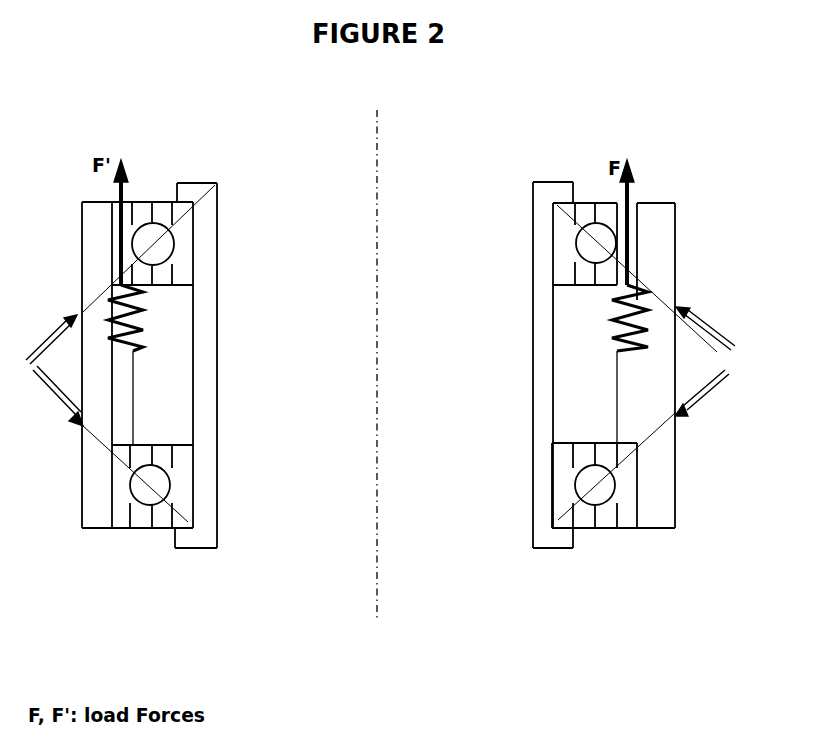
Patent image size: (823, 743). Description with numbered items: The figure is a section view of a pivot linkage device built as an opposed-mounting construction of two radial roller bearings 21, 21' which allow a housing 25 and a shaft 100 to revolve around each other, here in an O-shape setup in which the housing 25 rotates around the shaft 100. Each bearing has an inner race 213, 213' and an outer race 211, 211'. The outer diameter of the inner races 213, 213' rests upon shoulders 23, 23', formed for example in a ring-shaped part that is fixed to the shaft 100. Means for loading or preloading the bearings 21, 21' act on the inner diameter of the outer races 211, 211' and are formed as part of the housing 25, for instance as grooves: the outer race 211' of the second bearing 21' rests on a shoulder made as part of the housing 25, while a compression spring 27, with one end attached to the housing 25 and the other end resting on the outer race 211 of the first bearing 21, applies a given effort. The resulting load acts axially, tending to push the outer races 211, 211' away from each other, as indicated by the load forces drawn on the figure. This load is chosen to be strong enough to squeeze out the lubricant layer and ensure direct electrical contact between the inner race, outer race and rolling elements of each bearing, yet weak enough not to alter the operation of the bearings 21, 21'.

The shaft 100 is at (403, 500).
The first radial roller bearing 21 is at (218, 230).
The second radial roller bearing 21' is at (220, 467).
The outer race of the first bearing 211 is at (651, 204).
The outer race of the second bearing 211' is at (130, 530).
The inner race of the first bearing 213 is at (152, 200).
The inner race of the second bearing 213' is at (594, 525).
The shoulder 23 is at (207, 332).
The shoulder 23' is at (177, 571).
The housing 25 is at (663, 473).
The compression spring 27 is at (645, 302).